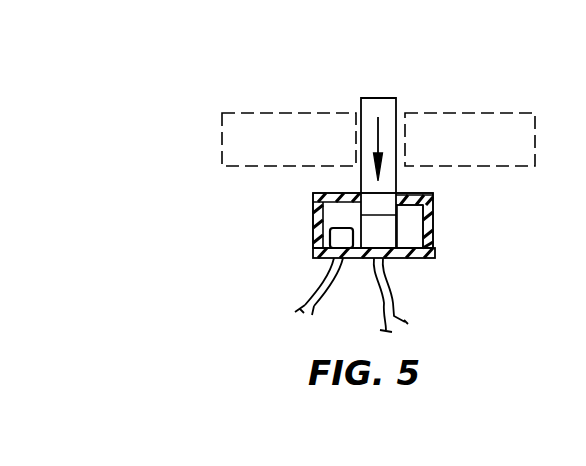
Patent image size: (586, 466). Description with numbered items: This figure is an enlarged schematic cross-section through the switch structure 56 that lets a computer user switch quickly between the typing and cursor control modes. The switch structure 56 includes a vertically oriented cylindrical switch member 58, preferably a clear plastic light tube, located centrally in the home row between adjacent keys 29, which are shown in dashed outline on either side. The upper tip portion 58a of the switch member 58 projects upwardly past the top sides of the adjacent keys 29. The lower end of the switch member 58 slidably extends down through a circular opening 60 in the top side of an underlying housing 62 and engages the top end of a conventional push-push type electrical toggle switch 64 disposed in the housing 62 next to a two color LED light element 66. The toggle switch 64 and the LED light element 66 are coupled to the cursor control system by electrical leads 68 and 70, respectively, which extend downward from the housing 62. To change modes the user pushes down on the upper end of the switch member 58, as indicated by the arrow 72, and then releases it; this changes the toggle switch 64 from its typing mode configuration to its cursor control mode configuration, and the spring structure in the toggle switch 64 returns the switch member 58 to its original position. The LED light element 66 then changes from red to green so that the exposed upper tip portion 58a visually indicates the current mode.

The keys 29 is at (255, 113).
The switch structure 56 is at (423, 71).
The cylindrical switch member 58 is at (384, 182).
The upper tip portion 58a is at (375, 97).
The circular opening 60 is at (401, 187).
The housing 62 is at (313, 210).
The push-push type electrical toggle switch 64 is at (387, 229).
The two color LED light element 66 is at (335, 238).
The electrical leads 68 is at (392, 306).
The electrical leads 70 is at (312, 288).
The arrow 72 is at (378, 118).